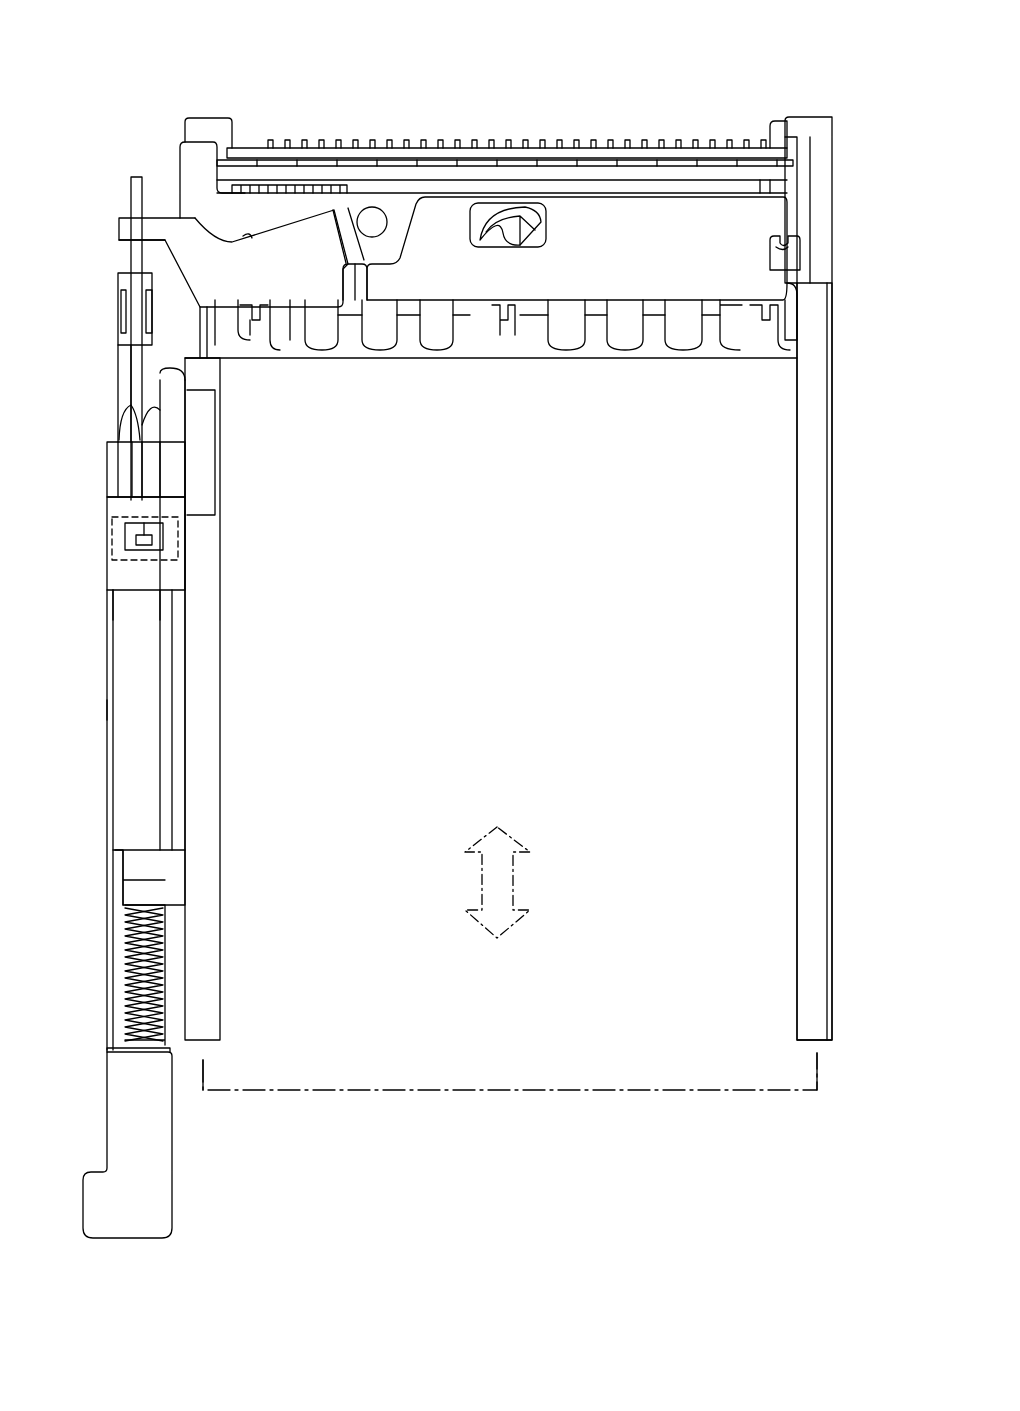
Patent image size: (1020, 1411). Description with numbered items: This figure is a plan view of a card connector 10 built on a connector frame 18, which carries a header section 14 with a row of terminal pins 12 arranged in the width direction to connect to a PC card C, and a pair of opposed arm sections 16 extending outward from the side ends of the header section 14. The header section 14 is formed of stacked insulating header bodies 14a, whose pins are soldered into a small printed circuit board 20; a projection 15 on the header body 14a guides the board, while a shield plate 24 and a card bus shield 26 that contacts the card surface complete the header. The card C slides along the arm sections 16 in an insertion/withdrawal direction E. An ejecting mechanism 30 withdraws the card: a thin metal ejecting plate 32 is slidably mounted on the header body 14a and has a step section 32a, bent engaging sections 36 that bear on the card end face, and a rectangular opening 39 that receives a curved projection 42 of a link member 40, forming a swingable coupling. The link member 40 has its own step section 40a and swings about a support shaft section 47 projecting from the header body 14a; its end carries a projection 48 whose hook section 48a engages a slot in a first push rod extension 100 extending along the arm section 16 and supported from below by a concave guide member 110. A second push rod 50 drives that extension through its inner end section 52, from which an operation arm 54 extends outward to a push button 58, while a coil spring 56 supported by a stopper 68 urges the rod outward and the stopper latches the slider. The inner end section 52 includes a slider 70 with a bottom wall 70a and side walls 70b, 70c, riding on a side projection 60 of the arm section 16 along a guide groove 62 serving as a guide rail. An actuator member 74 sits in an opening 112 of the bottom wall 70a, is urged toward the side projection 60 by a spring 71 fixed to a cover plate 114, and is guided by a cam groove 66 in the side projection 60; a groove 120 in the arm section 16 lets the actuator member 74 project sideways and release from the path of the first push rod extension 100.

The card connector 10 is at (618, 98).
The terminal pins 12 is at (334, 140).
The header section 14 is at (577, 378).
The header body 14a is at (230, 128).
The projection 15 is at (768, 125).
The arm section 16 is at (232, 758).
The connector frame 18 is at (846, 190).
The small printed circuit board 20 is at (745, 148).
The shield plate 24 is at (430, 160).
The card bus shield 26 is at (402, 355).
The ejecting mechanism 30 is at (101, 203).
The ejecting plate 32 is at (675, 290).
The step section 32a is at (366, 283).
The engaging section 36 is at (768, 248).
The opening 39 is at (470, 218).
The link member 40 is at (268, 305).
The step section 40a is at (332, 240).
The projection 42 is at (528, 228).
The support shaft section 47 is at (371, 207).
The projection 48 is at (158, 225).
The hook section 48a is at (120, 228).
The second push rod 50 is at (92, 783).
The inner end section 52 is at (110, 625).
The operation arm 54 is at (128, 923).
The coil spring 56 is at (130, 973).
The push button 58 is at (167, 1158).
The side projection 60 is at (122, 370).
The guide groove 62 is at (190, 377).
The cam groove 66 is at (172, 425).
The stopper 68 is at (130, 877).
The slider 70 is at (185, 797).
The bottom wall 70a is at (150, 832).
The side wall 70b is at (110, 712).
The side wall 70c is at (178, 672).
The spring 71 is at (128, 533).
The actuator member 74 is at (172, 530).
The first push rod extension 100 is at (132, 250).
The guide member 110 is at (120, 305).
The opening 112 is at (125, 570).
The cover plate 114 is at (178, 578).
The groove 120 is at (200, 492).
The insertion/withdrawal direction E is at (515, 887).
The PC card C is at (640, 1092).